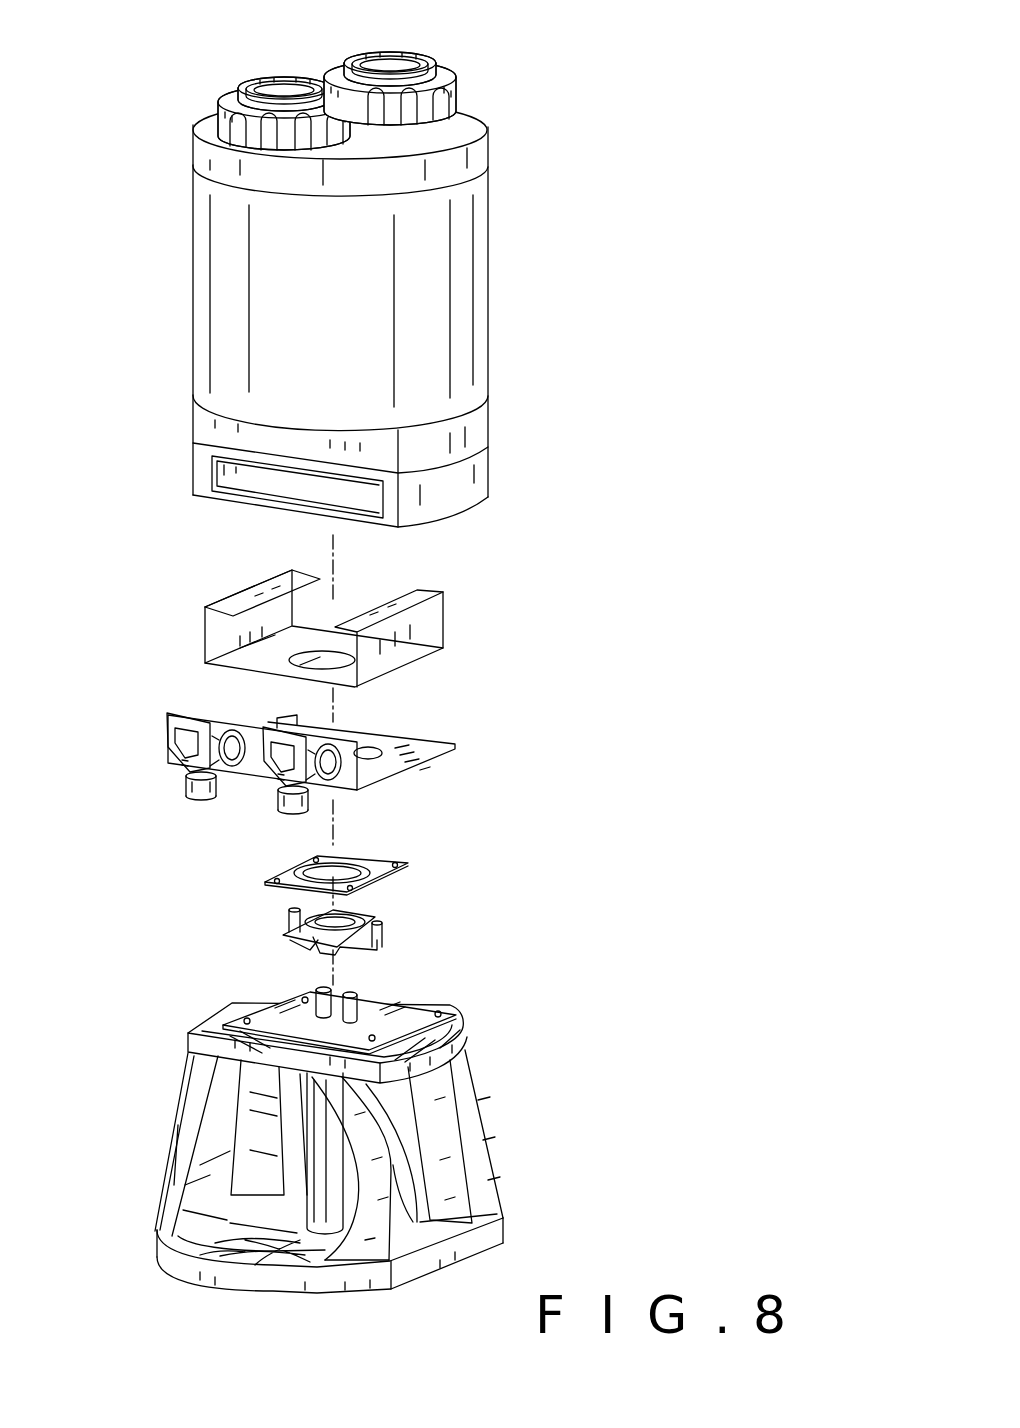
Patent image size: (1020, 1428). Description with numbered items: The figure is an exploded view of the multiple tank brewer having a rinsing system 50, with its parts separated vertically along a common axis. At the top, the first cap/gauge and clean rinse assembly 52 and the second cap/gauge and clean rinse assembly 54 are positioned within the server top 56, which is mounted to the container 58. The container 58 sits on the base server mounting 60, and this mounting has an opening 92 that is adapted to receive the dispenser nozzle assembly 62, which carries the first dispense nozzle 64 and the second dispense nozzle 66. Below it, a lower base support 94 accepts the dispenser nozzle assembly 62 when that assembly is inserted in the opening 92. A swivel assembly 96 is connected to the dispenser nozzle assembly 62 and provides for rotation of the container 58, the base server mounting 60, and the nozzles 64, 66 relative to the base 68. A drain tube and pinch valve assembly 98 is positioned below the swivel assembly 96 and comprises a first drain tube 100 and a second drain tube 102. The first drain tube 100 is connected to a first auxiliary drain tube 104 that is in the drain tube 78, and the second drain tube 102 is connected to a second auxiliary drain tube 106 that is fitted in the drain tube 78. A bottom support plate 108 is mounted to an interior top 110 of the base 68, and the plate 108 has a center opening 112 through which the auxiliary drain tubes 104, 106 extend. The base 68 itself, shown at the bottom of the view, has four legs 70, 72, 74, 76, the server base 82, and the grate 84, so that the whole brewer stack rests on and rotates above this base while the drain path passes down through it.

The multiple tank brewer having a rinsing system 50 is at (527, 393).
The first cap/gauge and clean rinse assembly 52 is at (249, 71).
The second cap/gauge and clean rinse assembly 54 is at (360, 43).
The server top 56 is at (460, 123).
The container 58 is at (216, 255).
The base server mounting 60 is at (462, 492).
The dispenser nozzle assembly 62 is at (256, 798).
The first dispense nozzle 64 is at (193, 774).
The second dispense nozzle 66 is at (317, 787).
The base 68 is at (494, 1129).
The leg 70 is at (173, 1144).
The leg 72 is at (404, 1236).
The leg 74 is at (481, 1175).
The leg 76 is at (253, 1118).
The drain tube 78 is at (328, 1175).
The server base 82 is at (339, 1281).
The grate 84 is at (207, 1244).
The opening 92 is at (280, 482).
The lower base support 94 is at (403, 647).
The swivel assembly 96 is at (410, 878).
The drain tube and pinch valve assembly 98 is at (387, 915).
The first drain tube 100 is at (288, 916).
The second drain tube 102 is at (383, 937).
The first auxiliary drain tube 104 is at (318, 992).
The second auxiliary drain tube 106 is at (358, 1000).
The bottom support plate 108 is at (456, 1019).
The interior top 110 is at (470, 1041).
The center opening 112 is at (340, 993).